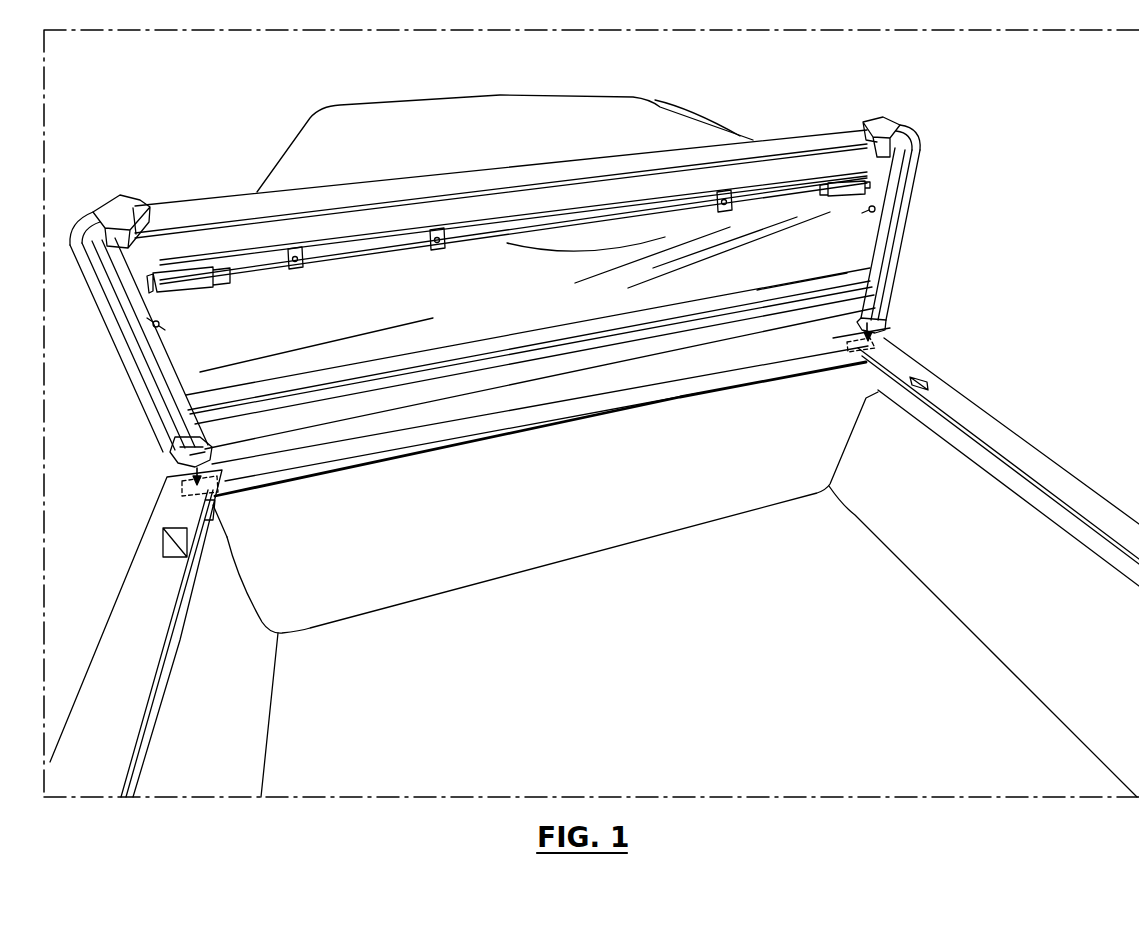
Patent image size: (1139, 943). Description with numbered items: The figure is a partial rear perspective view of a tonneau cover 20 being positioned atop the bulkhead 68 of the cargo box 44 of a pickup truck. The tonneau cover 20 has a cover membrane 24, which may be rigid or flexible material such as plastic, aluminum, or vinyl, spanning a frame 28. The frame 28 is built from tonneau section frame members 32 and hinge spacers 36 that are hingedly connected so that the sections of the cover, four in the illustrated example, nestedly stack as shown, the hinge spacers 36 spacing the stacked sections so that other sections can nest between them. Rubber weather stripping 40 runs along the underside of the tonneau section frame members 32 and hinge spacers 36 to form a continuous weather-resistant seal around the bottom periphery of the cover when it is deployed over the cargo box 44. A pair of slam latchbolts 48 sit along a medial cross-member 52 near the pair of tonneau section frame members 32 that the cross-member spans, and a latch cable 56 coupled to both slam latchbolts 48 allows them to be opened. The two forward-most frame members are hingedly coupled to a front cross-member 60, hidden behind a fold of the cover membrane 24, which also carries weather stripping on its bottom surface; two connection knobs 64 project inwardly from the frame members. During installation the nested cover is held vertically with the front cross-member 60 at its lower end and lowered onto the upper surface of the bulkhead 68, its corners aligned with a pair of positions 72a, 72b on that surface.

The tonneau cover 20 is at (227, 194).
The cover membrane 24 is at (333, 293).
The frame 28 is at (920, 148).
The tonneau section frame members 32 is at (112, 318).
The hinge spacers 36 is at (85, 223).
The rubber weather stripping 40 is at (105, 200).
The cargo box 44 is at (940, 490).
The slam latchbolts 48 is at (187, 277).
The medial cross-member 52 is at (515, 230).
The latch cable 56 is at (690, 213).
The front cross-member 60 is at (722, 336).
The connection knobs 64 is at (155, 332).
The bulkhead 68 is at (258, 470).
The position 72a is at (183, 485).
The position 72b is at (873, 340).